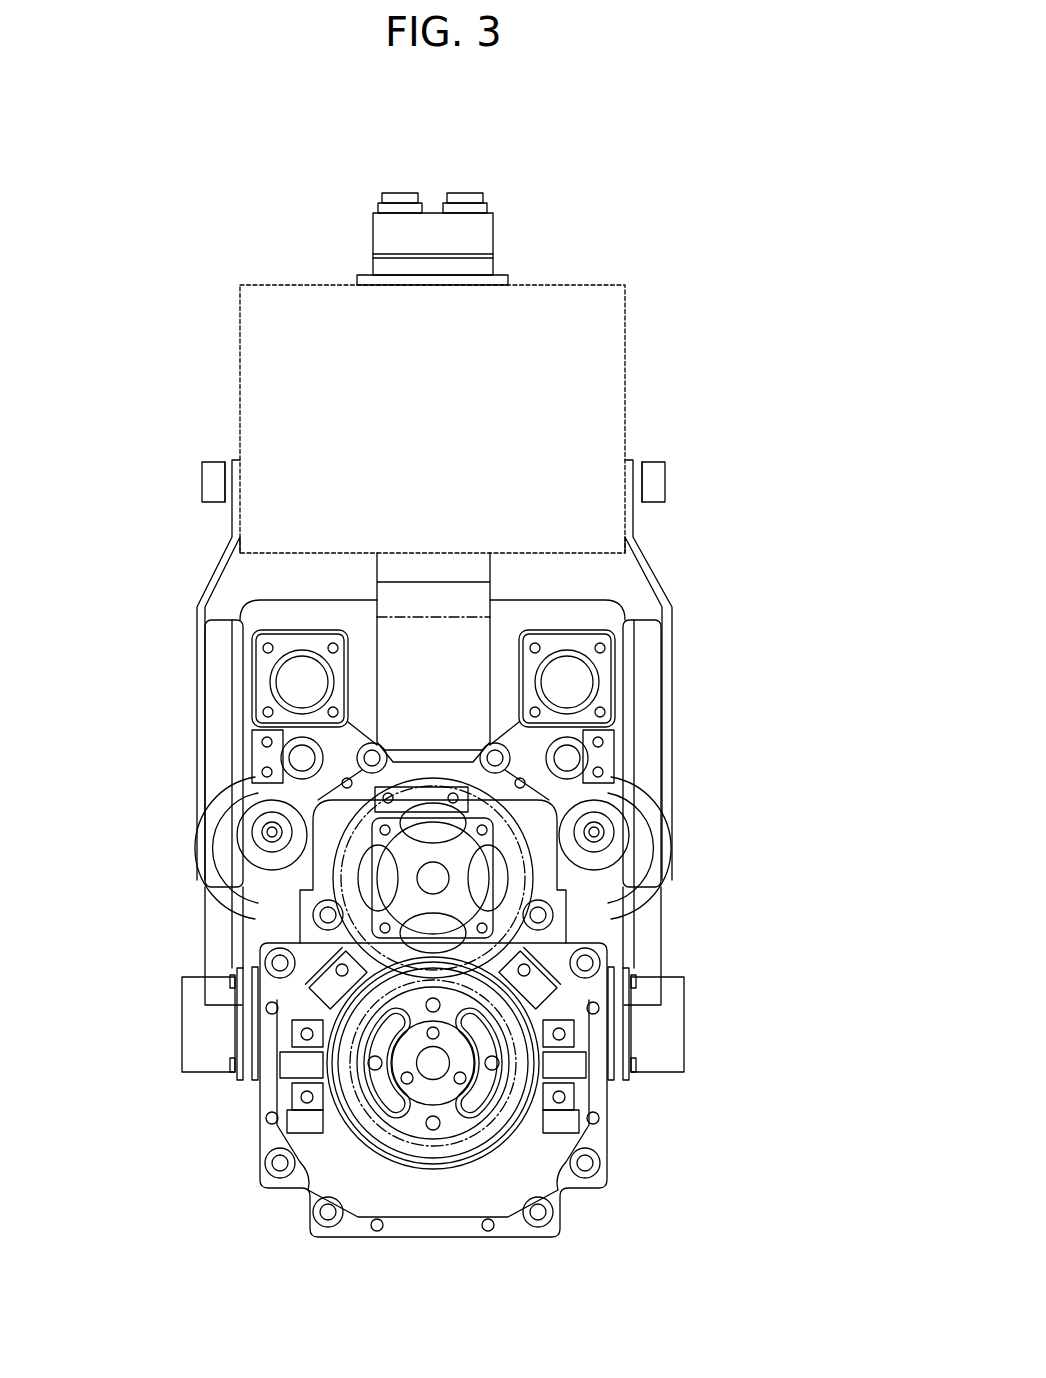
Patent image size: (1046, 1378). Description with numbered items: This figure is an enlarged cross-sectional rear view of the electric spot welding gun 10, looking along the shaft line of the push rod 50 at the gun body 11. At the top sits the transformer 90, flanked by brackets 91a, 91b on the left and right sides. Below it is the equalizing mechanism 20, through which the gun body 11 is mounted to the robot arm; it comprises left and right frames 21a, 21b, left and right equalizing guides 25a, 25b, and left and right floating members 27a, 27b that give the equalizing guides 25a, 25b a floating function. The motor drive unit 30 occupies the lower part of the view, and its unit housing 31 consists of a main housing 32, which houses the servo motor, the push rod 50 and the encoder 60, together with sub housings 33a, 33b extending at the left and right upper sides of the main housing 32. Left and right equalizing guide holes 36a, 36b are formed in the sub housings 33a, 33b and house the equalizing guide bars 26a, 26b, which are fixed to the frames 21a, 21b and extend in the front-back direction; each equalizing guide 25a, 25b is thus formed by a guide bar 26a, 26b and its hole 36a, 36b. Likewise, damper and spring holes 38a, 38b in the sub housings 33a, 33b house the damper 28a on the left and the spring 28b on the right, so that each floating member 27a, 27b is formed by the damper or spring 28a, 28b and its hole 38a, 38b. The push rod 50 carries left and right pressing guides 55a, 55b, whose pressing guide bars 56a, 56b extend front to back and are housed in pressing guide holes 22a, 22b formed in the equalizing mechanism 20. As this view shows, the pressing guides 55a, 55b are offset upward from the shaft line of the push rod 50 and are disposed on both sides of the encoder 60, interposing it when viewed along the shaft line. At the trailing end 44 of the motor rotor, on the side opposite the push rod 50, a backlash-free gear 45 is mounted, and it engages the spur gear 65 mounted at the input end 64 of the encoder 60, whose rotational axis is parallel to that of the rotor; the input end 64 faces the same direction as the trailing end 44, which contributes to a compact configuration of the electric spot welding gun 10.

The gun body 11 is at (437, 671).
The electric spot welding gun 10 is at (562, 136).
The transformer 90 is at (552, 297).
The bracket 91a is at (205, 540).
The bracket 91b is at (657, 540).
The equalizing mechanism 20 is at (683, 750).
The left frame 21a is at (222, 640).
The right frame 21b is at (645, 640).
The left sub housing 33a is at (218, 636).
The right sub housing 33b is at (572, 632).
The unit housing 31 is at (295, 632).
The main housing 32 is at (610, 1108).
The left floating member 27a is at (100, 662).
The right floating member 27b is at (767, 662).
The damper 28a is at (302, 682).
The spring 28b is at (567, 682).
The left damper and spring hole 38a is at (290, 692).
The right damper and spring hole 38b is at (578, 692).
The left equalizing guide 25a is at (100, 752).
The right equalizing guide 25b is at (767, 752).
The left equalizing guide bar 26a is at (302, 758).
The right equalizing guide bar 26b is at (567, 758).
The left equalizing guide hole 36a is at (278, 785).
The right equalizing guide hole 36b is at (590, 785).
The left pressing guide 55a is at (100, 835).
The right pressing guide 55b is at (767, 835).
The left pressing guide bar 56a is at (270, 832).
The right pressing guide bar 56b is at (597, 832).
The left pressing guide hole 22a is at (255, 862).
The right pressing guide hole 22b is at (612, 862).
The encoder 60 is at (385, 878).
The input end 64 is at (428, 880).
The gear 65 is at (500, 766).
The motor drive unit 30 is at (243, 1165).
The push rod 50 is at (410, 1115).
The trailing end 44 is at (433, 1067).
The gear 45 is at (465, 1143).